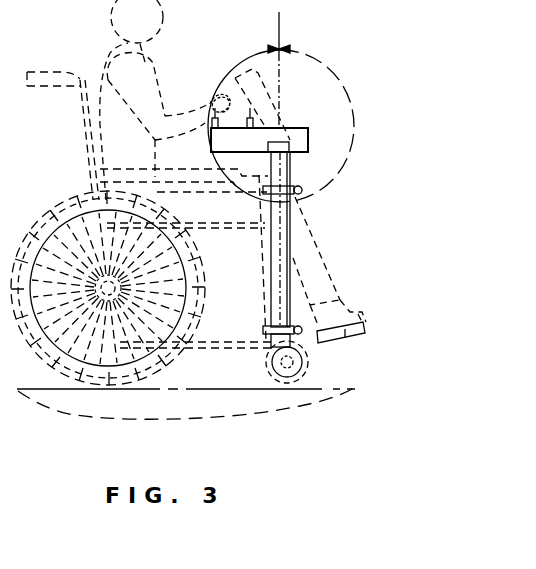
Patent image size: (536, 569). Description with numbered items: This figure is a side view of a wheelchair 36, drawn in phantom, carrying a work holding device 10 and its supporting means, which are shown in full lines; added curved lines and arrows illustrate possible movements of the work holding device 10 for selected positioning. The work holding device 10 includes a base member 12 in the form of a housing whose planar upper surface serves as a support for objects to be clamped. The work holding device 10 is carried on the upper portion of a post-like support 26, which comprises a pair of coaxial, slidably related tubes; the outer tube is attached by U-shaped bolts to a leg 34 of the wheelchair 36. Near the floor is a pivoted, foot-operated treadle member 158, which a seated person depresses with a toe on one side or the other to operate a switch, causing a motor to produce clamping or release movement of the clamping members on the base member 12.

The work holding device 10 is at (251, 72).
The base member 12 is at (257, 150).
The post-like support 26 is at (293, 262).
The leg 34 is at (262, 247).
The wheelchair 36 is at (73, 197).
The foot-operated treadle member 158 is at (346, 328).